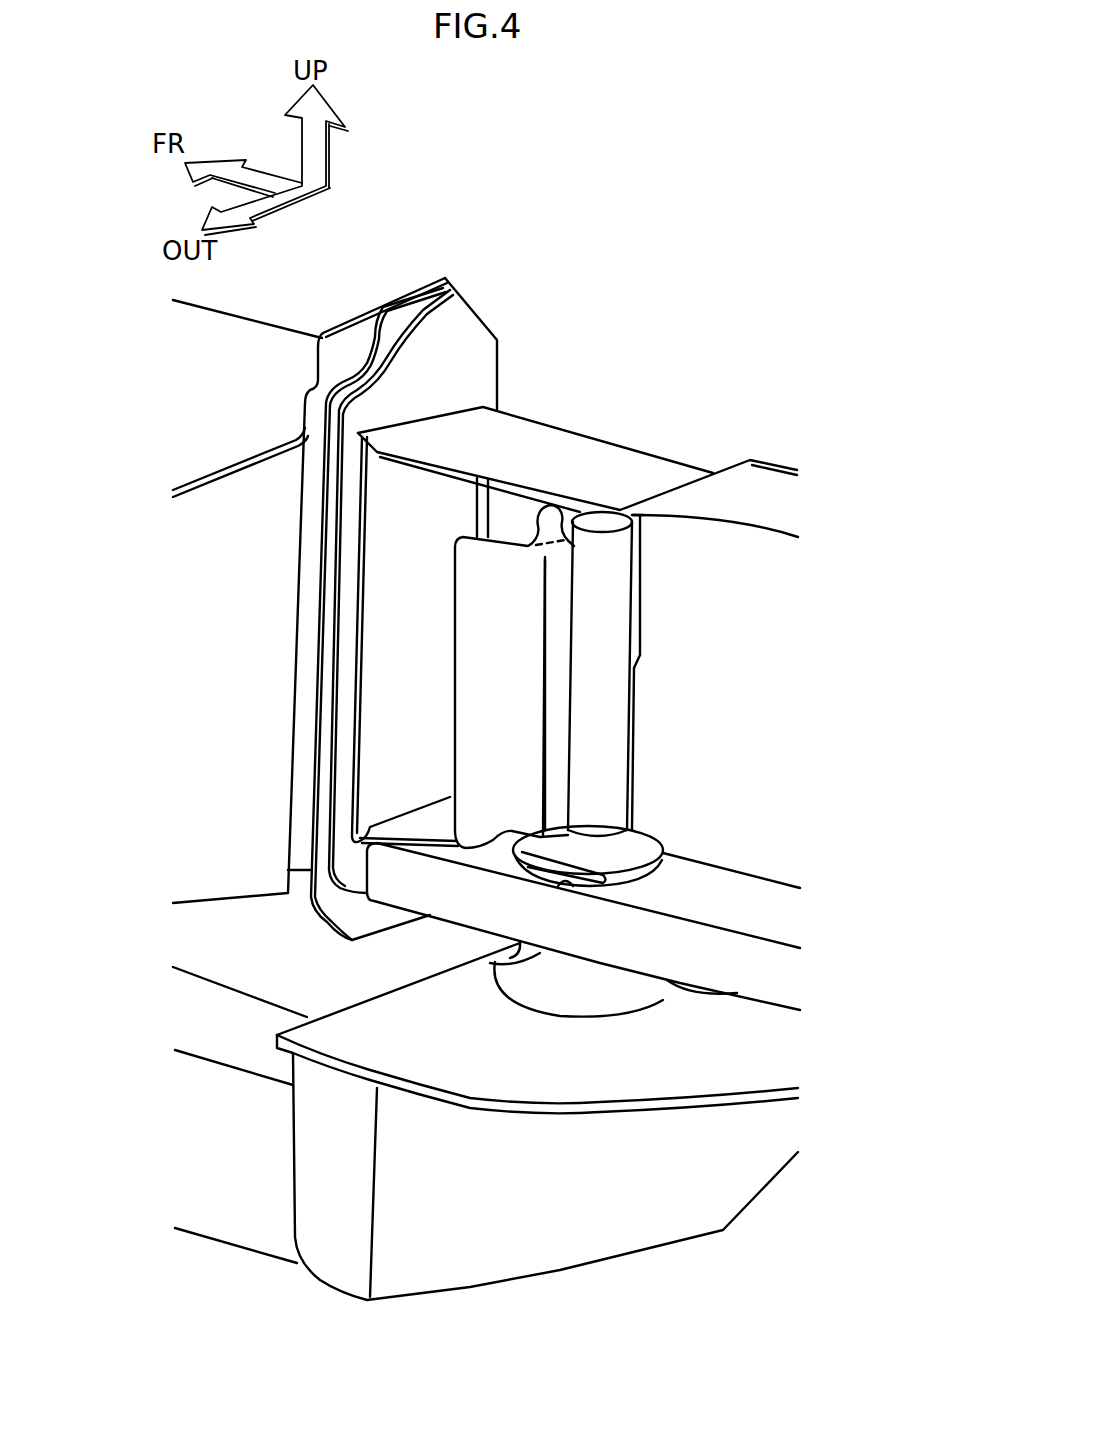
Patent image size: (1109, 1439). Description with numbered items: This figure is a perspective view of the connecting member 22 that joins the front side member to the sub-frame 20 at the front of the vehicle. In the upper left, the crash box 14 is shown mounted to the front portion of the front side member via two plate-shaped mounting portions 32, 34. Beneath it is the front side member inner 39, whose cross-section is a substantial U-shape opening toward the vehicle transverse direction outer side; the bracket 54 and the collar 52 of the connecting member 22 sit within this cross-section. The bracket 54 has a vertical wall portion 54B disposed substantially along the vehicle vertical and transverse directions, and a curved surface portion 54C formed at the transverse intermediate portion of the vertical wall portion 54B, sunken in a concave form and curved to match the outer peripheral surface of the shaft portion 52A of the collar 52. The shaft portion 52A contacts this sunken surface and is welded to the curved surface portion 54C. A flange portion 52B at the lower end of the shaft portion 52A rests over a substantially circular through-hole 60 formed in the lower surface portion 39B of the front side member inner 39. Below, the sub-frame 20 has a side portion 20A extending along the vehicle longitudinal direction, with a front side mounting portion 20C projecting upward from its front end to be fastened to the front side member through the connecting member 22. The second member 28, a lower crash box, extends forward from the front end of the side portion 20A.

The crash box 14 is at (250, 337).
The sub-frame 20 is at (553, 1121).
The side portion 20A is at (582, 1200).
The front side mounting portion 20C is at (515, 945).
The connecting member 22 is at (652, 668).
The second member 28 is at (227, 1008).
The mounting portion 32 is at (457, 322).
The mounting portion 34 is at (353, 322).
The front side member inner 39 is at (535, 452).
The lower surface portion 39B is at (717, 895).
The collar 52 is at (632, 699).
The shaft portion 52A is at (613, 622).
The flange portion 52B is at (630, 850).
The bracket 54 is at (538, 609).
The vertical wall portion 54B is at (555, 767).
The curved surface portion 54C is at (567, 512).
The through-hole 60 is at (563, 887).